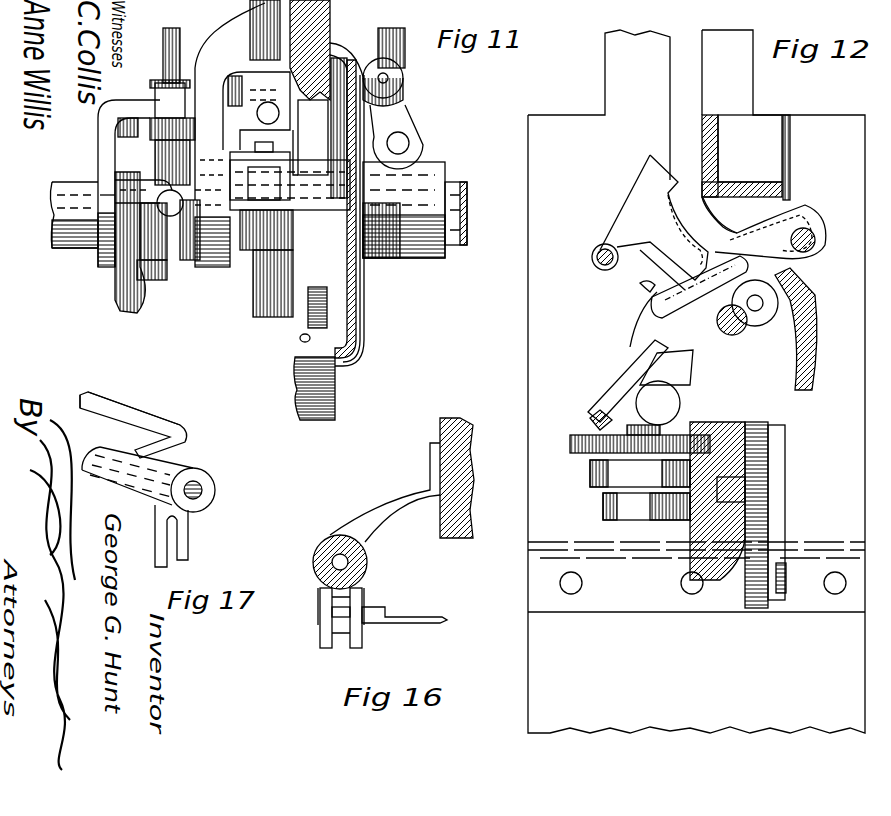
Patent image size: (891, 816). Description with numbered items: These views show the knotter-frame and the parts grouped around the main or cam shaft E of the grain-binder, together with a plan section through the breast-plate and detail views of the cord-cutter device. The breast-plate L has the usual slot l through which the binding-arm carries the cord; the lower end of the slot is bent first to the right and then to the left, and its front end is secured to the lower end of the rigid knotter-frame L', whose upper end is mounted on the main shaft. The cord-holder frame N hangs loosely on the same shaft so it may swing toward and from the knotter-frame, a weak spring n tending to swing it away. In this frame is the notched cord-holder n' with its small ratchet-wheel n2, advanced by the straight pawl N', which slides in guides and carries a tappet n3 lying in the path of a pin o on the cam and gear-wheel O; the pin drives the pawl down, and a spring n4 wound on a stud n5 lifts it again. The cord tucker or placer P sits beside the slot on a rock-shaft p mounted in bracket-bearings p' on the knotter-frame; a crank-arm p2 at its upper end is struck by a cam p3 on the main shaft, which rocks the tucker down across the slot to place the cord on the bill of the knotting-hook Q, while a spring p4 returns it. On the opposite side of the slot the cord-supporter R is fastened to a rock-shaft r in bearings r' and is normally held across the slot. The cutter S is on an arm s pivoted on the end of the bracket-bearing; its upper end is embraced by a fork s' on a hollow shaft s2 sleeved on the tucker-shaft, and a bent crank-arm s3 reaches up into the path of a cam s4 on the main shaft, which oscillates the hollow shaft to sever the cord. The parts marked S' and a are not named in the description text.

In FIG. 11, the breast-plate L is at (237, 100).
In FIG. 12, the breast-plate L is at (696, 381).
In FIG. 12, the knotter-frame L' is at (746, 174).
In FIG. 16, the knotter-frame L' is at (459, 465).
In FIG. 12, the slot l is at (679, 64).
In FIG. 11, the rock-shaft p is at (194, 173).
In FIG. 12, the rock-shaft p is at (592, 248).
In FIG. 16, the rock-shaft p is at (370, 562).
In FIG. 11, the bracket-bearings p' is at (114, 183).
In FIG. 16, the bracket-bearings p' is at (385, 492).
In FIG. 11, the crank-arm p2 is at (115, 185).
In FIG. 11, the cam p3 is at (120, 305).
In FIG. 12, the spring p4 is at (600, 268).
In FIG. 12, the cord tucker or placer P is at (654, 222).
In FIG. 12, the cutter arm s is at (634, 385).
In FIG. 16, the cutter arm s is at (320, 612).
In FIG. 16, the fork s' is at (328, 628).
In FIG. 17, the fork s' is at (184, 536).
In FIG. 11, the hollow shaft s2 is at (159, 169).
In FIG. 16, the hollow shaft s2 is at (316, 572).
In FIG. 17, the hollow shaft s2 is at (193, 466).
In FIG. 11, the bent crank-arm s3 is at (105, 200).
In FIG. 17, the bent crank-arm s3 is at (120, 405).
In FIG. 11, the cam s4 is at (110, 268).
In FIG. 12, the cutter S is at (671, 367).
In FIG. 16, the rod S' is at (404, 606).
In FIG. 11, the spring n is at (60, 229).
In FIG. 12, the notched cord-holder n' is at (625, 439).
In FIG. 12, the ratchet-wheel n2 is at (603, 505).
In FIG. 11, the tappet n3 is at (415, 115).
In FIG. 11, the spring n4 is at (293, 270).
In FIG. 11, the stud n5 is at (252, 312).
In FIG. 11, the cord-holder frame N is at (353, 201).
In FIG. 12, the cord-holder frame N is at (762, 515).
In FIG. 11, the straight pawl N' is at (245, 136).
In FIG. 12, the straight pawl N' is at (770, 489).
In FIG. 11, the pin o is at (304, 340).
In FIG. 11, the cam and gear-wheel O is at (310, 23).
In FIG. 11, the rock-shaft r is at (393, 97).
In FIG. 12, the rock-shaft r is at (815, 240).
In FIG. 12, the bearings r' is at (807, 198).
In FIG. 12, the cord-supporter R is at (735, 247).
In FIG. 12, the knotting-hook Q is at (723, 323).
In FIG. 11, the main or cam shaft E is at (427, 210).
In FIG. 12, the edge a is at (885, 214).